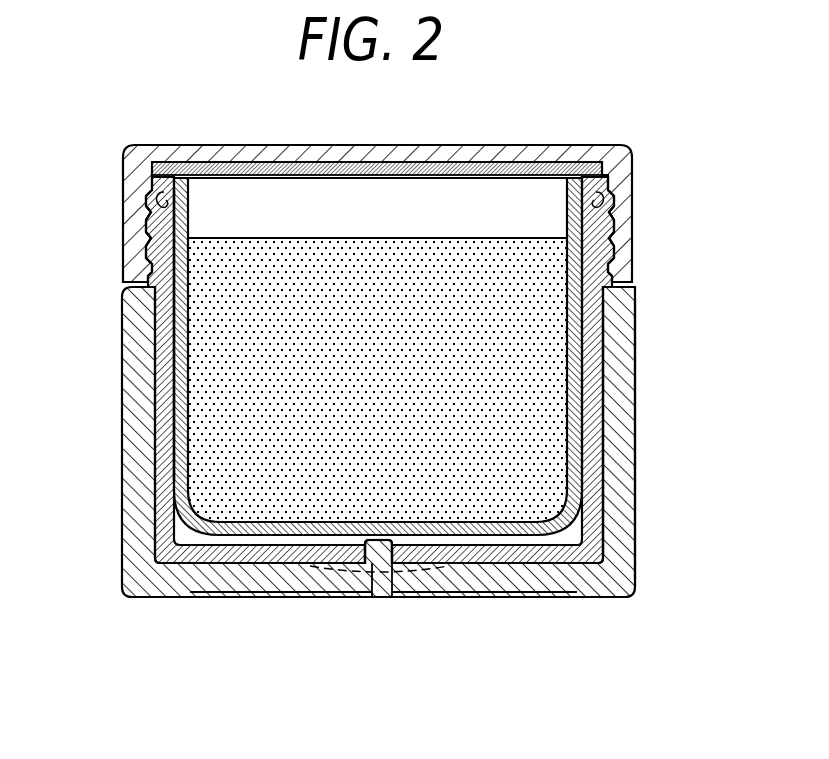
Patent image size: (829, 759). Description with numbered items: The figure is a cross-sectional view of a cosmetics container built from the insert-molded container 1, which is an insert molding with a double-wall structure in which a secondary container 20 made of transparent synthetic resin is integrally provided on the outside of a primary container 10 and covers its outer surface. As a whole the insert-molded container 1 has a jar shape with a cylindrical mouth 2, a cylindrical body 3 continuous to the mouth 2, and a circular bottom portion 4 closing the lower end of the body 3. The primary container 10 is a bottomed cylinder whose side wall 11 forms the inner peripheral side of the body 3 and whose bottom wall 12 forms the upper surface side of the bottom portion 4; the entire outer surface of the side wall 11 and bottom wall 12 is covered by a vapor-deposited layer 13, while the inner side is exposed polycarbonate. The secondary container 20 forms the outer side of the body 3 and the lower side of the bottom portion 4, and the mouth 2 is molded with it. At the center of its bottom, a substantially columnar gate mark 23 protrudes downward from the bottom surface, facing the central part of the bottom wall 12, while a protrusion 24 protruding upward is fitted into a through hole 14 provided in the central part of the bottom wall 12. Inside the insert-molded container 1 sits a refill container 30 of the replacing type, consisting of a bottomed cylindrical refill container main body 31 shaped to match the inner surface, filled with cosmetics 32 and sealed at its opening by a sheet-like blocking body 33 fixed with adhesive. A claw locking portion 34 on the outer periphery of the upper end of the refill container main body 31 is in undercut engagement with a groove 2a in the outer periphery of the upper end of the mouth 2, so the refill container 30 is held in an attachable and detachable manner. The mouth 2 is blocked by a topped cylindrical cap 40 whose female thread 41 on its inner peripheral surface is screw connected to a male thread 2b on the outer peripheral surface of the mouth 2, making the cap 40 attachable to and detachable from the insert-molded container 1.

The insert-molded container 1 is at (638, 328).
The mouth 2 is at (616, 224).
The groove 2a is at (604, 205).
The male thread 2b is at (616, 247).
The body 3 is at (638, 428).
The bottom portion 4 is at (483, 598).
The primary container 10 is at (606, 360).
The side wall 11 is at (601, 394).
The bottom wall 12 is at (250, 556).
The vapor-deposited layer 13 is at (591, 494).
The through hole 14 is at (381, 566).
The secondary container 20 is at (638, 455).
The gate mark 23 is at (373, 598).
The protrusion 24 is at (380, 550).
The refill container 30 is at (558, 527).
The refill container main body 31 is at (175, 397).
The cosmetics 32 is at (302, 347).
The blocking body 33 is at (336, 173).
The claw locking portion 34 is at (613, 222).
The cap 40 is at (586, 144).
The female thread 41 is at (150, 236).